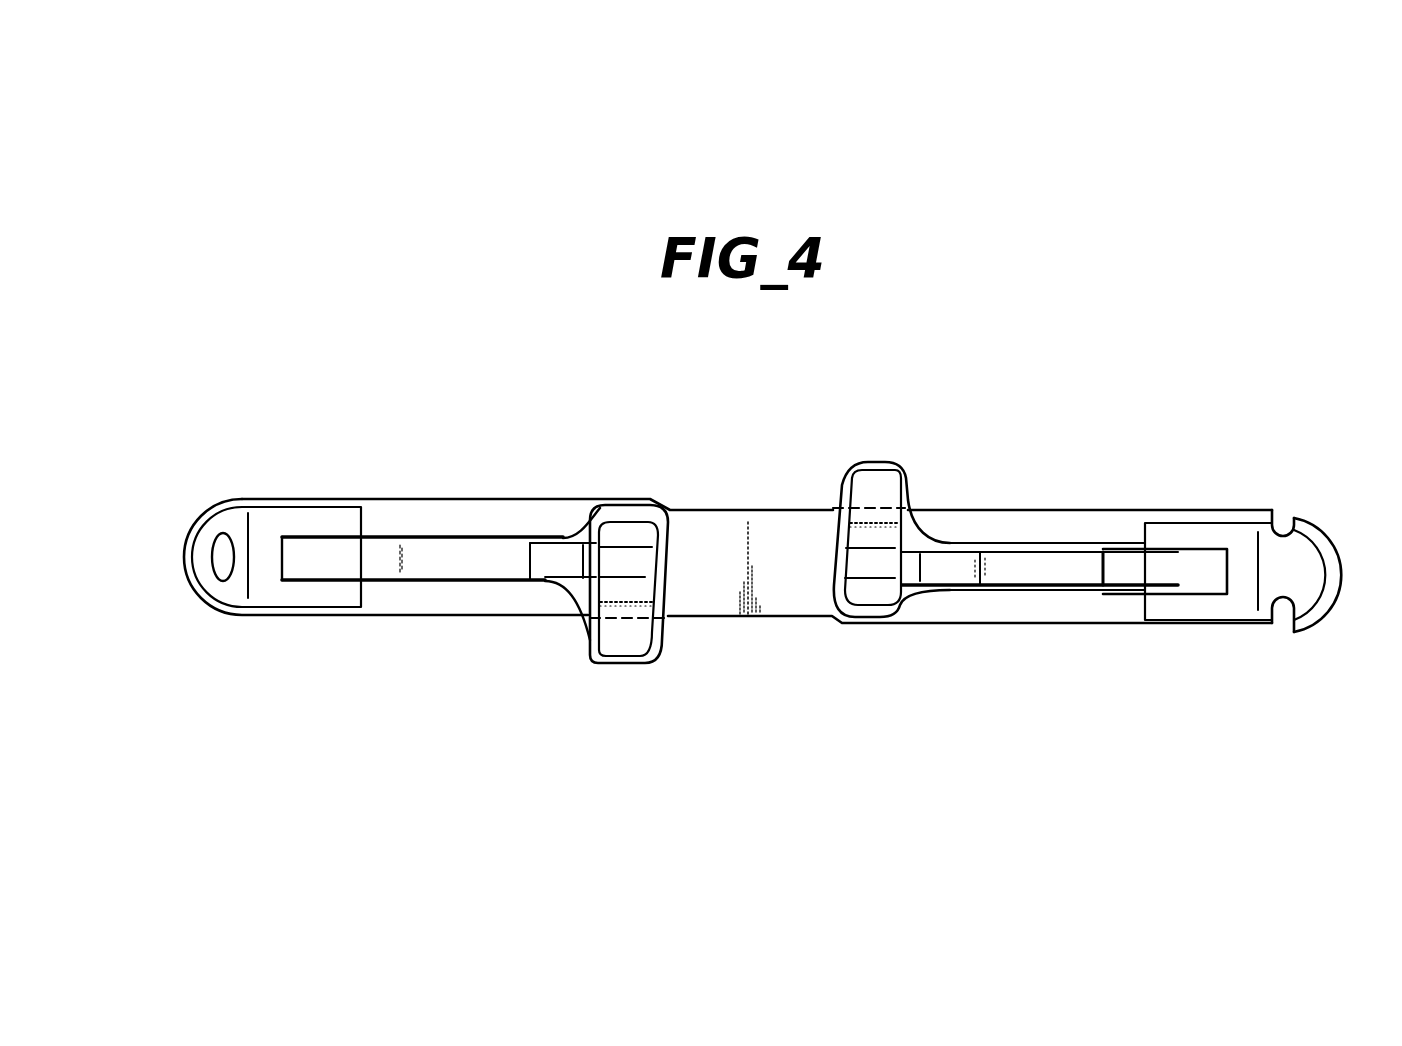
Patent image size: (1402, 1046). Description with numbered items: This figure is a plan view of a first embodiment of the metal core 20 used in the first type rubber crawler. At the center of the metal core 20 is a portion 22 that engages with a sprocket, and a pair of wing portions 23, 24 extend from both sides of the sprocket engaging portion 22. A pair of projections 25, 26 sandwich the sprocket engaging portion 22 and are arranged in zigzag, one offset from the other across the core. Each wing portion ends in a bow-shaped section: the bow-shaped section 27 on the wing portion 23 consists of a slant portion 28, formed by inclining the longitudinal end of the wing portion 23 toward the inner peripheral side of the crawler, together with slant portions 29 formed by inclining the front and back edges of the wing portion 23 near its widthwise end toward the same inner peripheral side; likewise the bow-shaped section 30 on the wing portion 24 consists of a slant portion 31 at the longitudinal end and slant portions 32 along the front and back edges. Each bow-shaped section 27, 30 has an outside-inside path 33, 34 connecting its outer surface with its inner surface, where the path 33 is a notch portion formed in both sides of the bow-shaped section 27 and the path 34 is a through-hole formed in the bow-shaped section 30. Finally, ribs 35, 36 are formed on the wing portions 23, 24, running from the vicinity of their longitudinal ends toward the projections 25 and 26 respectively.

The metal core 20 is at (1044, 500).
The sprocket engaging portion 22 is at (748, 510).
The wing portion 23 is at (992, 626).
The wing portion 24 is at (470, 500).
The projection 25 is at (865, 588).
The projection 26 is at (620, 640).
The bow-shaped section 27 is at (1247, 624).
The slant portion 28 is at (1298, 578).
The slant portions 29 is at (1207, 513).
The bow-shaped section 30 is at (218, 616).
The slant portion 31 is at (199, 561).
The slant portions 32 is at (308, 504).
The outside-inside path 33 is at (1283, 520).
The outside-inside path 34 is at (222, 533).
The rib 35 is at (1072, 570).
The rib 36 is at (455, 565).